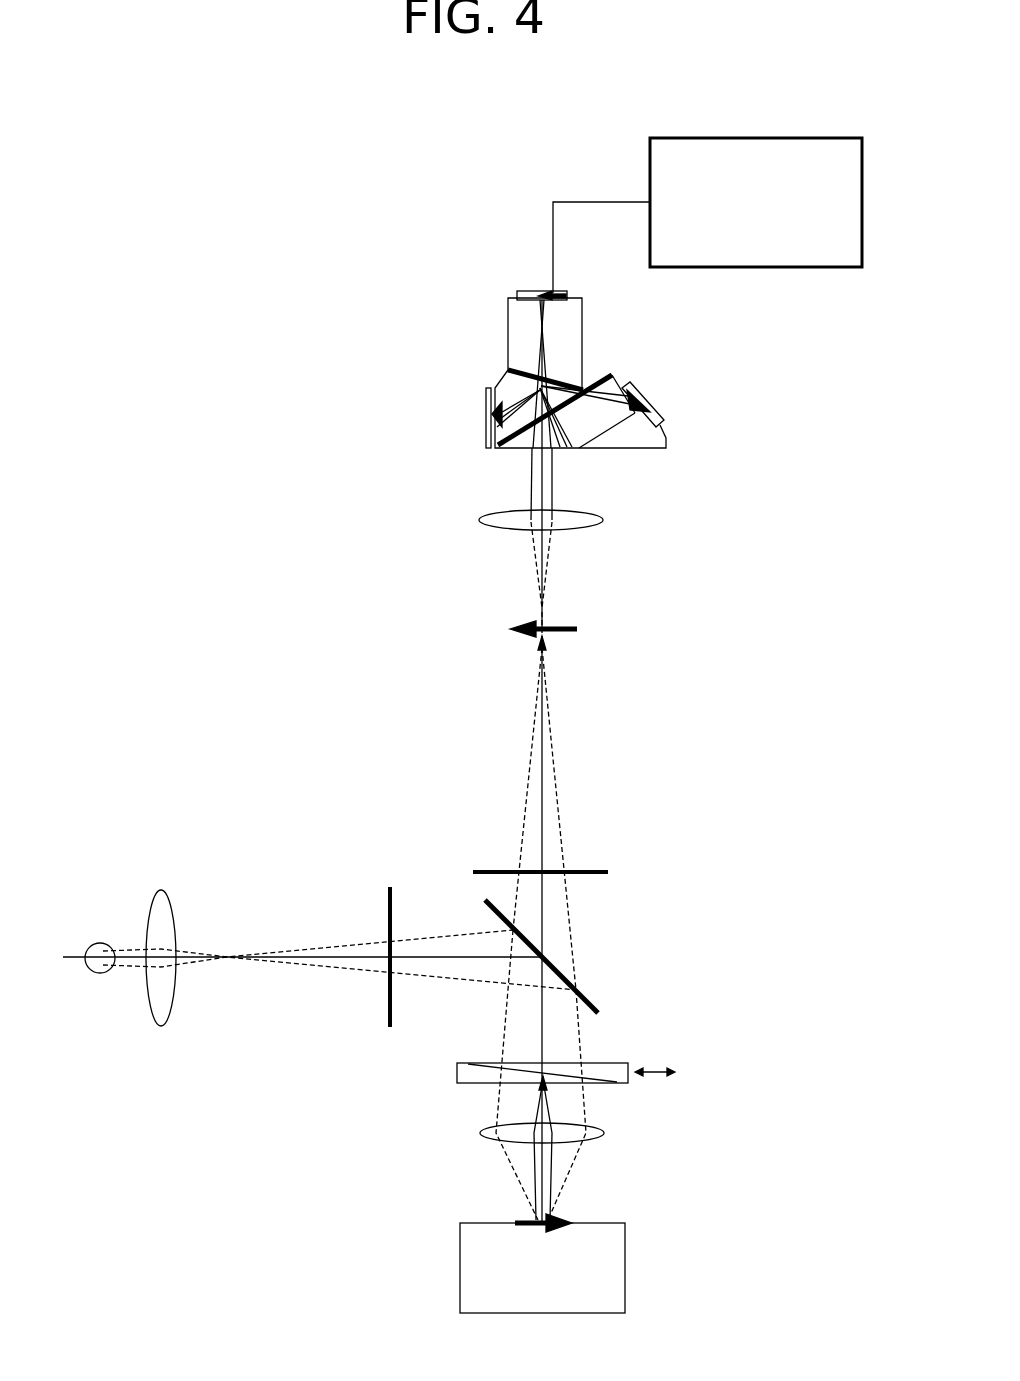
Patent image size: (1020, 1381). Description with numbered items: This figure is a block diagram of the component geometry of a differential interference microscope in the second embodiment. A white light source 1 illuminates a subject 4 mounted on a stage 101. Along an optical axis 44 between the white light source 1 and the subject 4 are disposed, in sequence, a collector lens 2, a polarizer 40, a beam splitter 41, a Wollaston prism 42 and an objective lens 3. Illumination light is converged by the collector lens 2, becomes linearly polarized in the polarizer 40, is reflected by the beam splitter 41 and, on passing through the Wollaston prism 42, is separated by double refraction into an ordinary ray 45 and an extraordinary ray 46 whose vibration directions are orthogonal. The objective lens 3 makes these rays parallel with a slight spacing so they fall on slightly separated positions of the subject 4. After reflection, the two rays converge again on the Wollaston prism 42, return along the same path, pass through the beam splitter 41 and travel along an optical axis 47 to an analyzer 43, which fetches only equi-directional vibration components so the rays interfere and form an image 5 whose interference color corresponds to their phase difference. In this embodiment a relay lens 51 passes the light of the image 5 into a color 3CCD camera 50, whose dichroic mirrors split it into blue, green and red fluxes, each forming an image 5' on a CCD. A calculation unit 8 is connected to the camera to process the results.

The white light source 1 is at (100, 943).
The collector lens 2 is at (161, 890).
The objective lens 3 is at (603, 1133).
The subject 4 is at (560, 1215).
The image 5 is at (574, 622).
The image 5' is at (559, 369).
The calculation unit 8 is at (805, 138).
The polarizer 40 is at (385, 905).
The beam splitter 41 is at (592, 1005).
The Wollaston prism 42 is at (608, 1060).
The analyzer 43 is at (592, 870).
The optical axis 44 is at (292, 947).
The ordinary ray 45 is at (530, 1112).
The extraordinary ray 46 is at (552, 1110).
The optical axis 47 is at (546, 736).
The color 3CCD camera 50 is at (615, 461).
The relay lens 51 is at (603, 520).
The stage 101 is at (627, 1232).